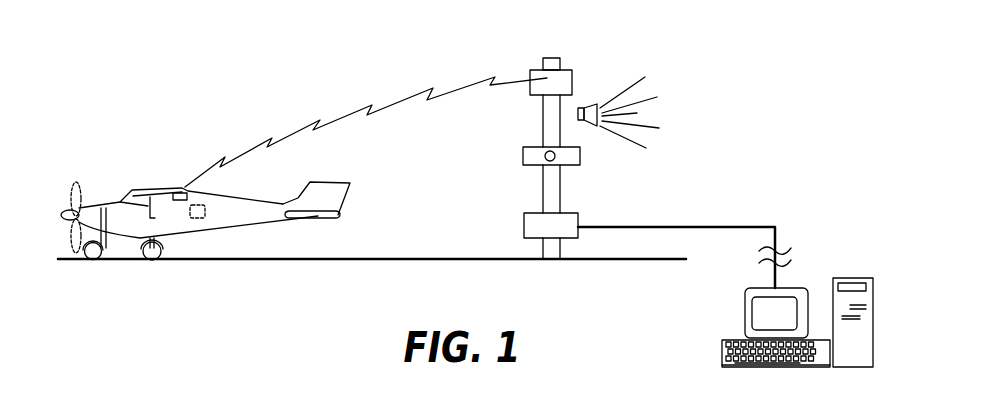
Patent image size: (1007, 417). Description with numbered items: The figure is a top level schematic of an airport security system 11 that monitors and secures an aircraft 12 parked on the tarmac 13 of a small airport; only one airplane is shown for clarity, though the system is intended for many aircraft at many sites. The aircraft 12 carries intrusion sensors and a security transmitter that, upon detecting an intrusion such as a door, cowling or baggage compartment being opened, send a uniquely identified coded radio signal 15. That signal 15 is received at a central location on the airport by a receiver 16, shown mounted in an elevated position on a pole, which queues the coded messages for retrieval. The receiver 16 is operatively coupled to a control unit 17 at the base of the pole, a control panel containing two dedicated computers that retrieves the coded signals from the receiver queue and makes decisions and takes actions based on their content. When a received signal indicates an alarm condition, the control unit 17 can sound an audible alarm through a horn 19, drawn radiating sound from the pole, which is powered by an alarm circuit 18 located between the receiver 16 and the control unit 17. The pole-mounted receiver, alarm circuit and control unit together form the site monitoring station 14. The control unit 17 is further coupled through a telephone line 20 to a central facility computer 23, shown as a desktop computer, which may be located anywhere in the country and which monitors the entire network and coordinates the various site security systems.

The aircraft noise monitoring system 11 is at (663, 34).
The aircraft 12 is at (120, 168).
The tarmac 13 is at (245, 260).
The monitoring station 14 is at (648, 167).
The coded radio signal 15 is at (336, 113).
The receiver 16 is at (578, 107).
The control unit 17 is at (568, 212).
The alarm circuit 18 is at (523, 152).
The horn 19 is at (597, 102).
The telephone line 20 is at (778, 230).
The central facility computer 23 is at (715, 229).